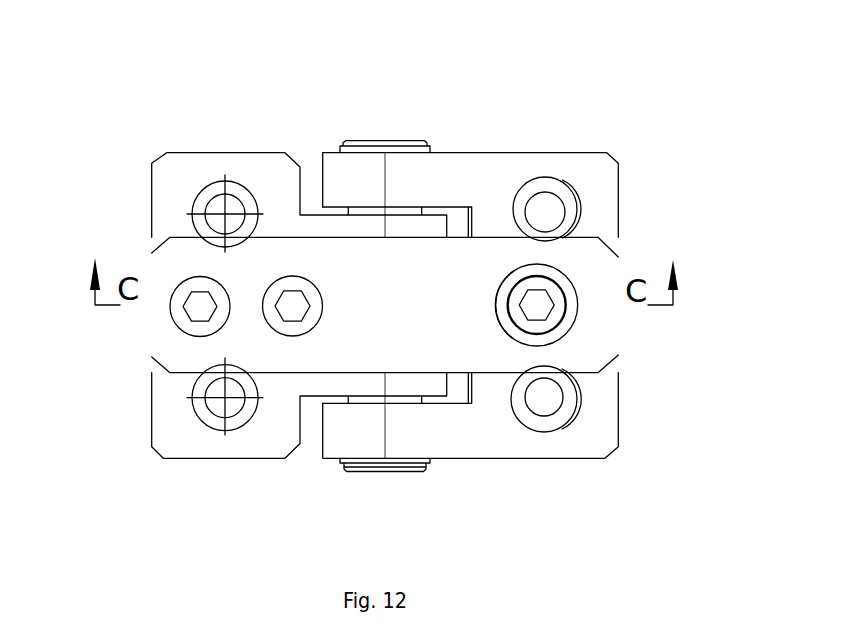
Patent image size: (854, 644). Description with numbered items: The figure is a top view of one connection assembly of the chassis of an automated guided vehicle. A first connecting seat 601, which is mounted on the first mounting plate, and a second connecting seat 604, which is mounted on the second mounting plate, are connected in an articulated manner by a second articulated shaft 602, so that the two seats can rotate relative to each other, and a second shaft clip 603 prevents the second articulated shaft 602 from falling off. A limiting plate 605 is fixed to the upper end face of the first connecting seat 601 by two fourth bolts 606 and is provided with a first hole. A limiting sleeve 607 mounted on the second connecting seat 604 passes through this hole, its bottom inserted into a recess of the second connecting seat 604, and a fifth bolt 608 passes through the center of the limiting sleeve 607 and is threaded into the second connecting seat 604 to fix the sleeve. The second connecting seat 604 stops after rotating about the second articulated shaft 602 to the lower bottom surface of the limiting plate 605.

The first connecting seat 601 is at (177, 202).
The second articulated shaft 602 is at (357, 147).
The second shaft clip 603 is at (348, 462).
The second connecting seat 604 is at (499, 442).
The limiting plate 605 is at (273, 263).
The fourth bolt 606 is at (188, 322).
The limiting sleeve 607 is at (527, 270).
The fifth bolt 608 is at (556, 293).